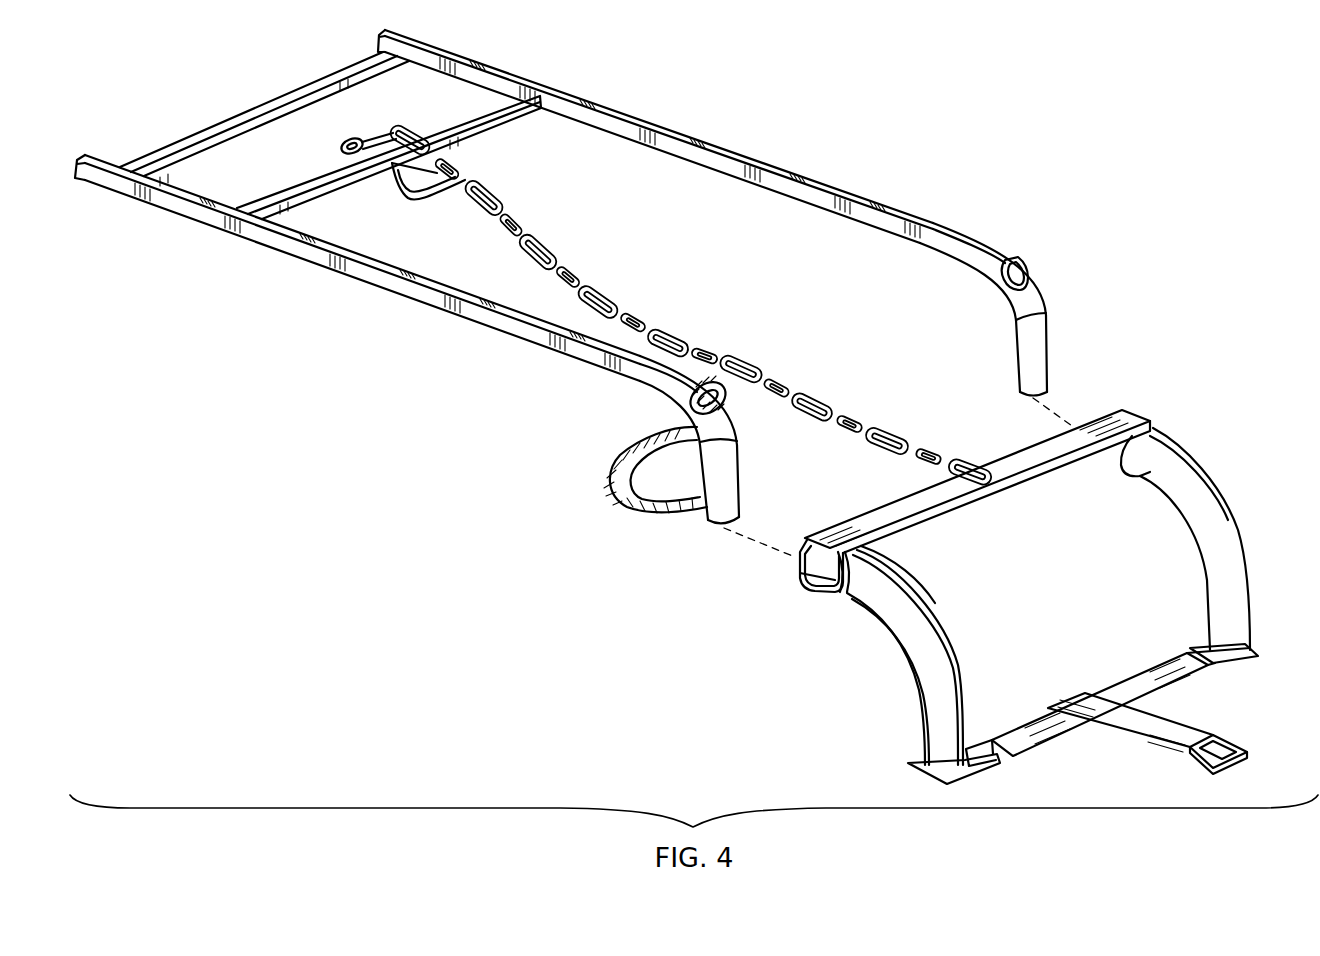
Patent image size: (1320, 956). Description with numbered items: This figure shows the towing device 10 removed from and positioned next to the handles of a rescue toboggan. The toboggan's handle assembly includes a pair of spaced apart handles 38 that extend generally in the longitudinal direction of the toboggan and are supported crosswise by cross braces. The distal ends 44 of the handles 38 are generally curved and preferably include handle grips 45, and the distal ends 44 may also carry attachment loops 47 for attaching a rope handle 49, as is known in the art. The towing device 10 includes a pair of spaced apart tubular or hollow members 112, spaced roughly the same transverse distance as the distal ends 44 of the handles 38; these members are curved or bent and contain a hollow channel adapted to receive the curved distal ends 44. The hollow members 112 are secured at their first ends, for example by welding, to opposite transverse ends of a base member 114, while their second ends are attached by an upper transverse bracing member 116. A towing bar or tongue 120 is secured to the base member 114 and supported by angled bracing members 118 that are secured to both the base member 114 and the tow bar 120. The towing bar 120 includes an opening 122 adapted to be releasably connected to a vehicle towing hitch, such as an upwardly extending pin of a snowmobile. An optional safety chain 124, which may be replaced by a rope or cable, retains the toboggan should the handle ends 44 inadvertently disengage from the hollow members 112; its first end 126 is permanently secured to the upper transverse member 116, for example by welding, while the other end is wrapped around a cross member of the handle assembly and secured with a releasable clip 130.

The towing device 10 is at (1196, 412).
The handles 38 is at (713, 147).
The distal ends 44 is at (972, 341).
The handle grips 45 is at (1045, 384).
The attachment loops 47 is at (1017, 257).
The rope handle 49 is at (613, 468).
The tubular or hollow members 112 is at (1187, 512).
The base member 114 is at (1120, 690).
The upper transverse bracing member 116 is at (887, 512).
The angled bracing members 118 is at (1177, 673).
The towing bar or tongue 120 is at (1173, 747).
The opening 122 is at (1230, 740).
The safety chain 124 is at (607, 297).
The first end of safety chain 126 is at (985, 487).
The releasable clip 130 is at (447, 203).